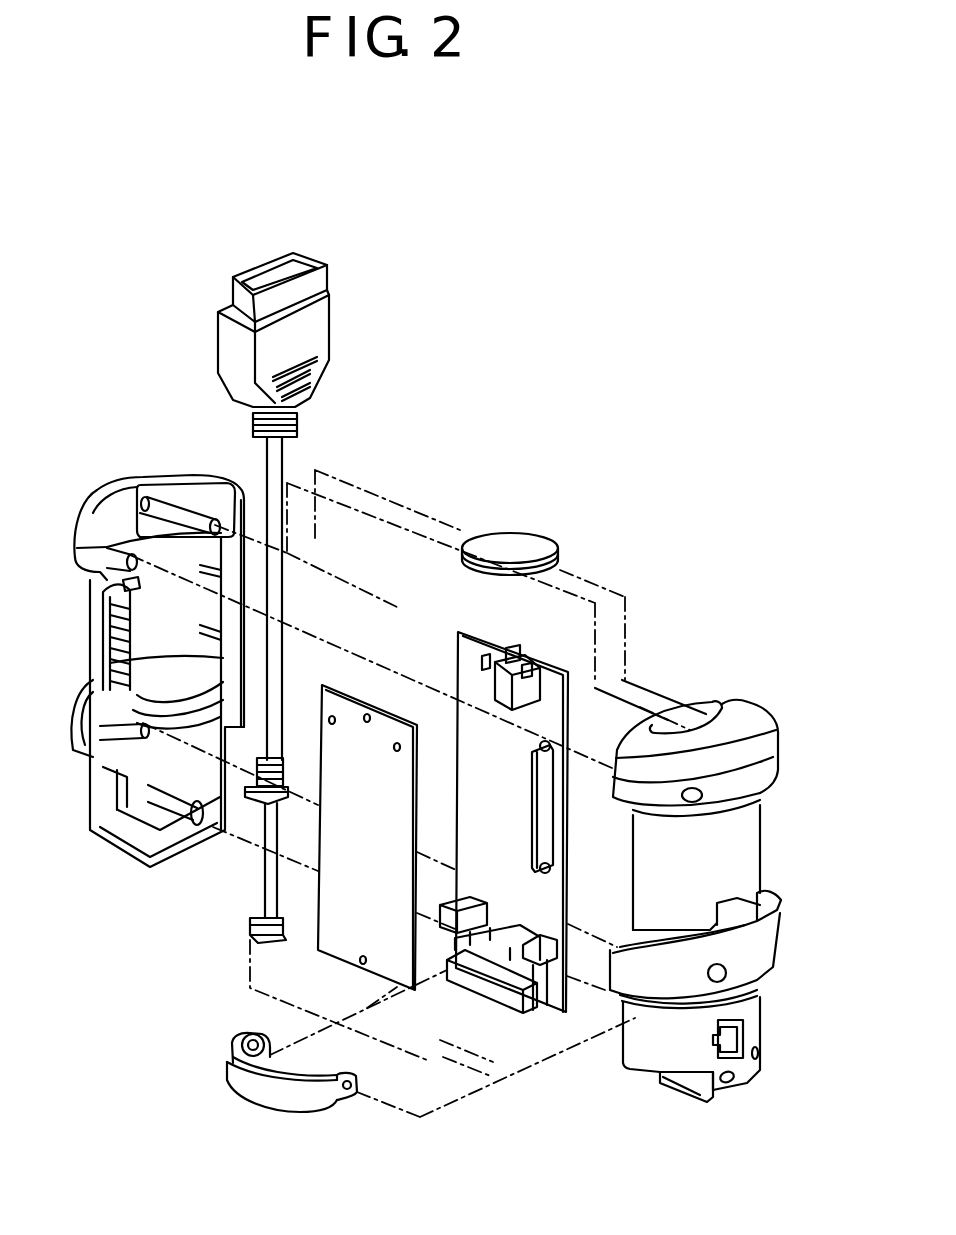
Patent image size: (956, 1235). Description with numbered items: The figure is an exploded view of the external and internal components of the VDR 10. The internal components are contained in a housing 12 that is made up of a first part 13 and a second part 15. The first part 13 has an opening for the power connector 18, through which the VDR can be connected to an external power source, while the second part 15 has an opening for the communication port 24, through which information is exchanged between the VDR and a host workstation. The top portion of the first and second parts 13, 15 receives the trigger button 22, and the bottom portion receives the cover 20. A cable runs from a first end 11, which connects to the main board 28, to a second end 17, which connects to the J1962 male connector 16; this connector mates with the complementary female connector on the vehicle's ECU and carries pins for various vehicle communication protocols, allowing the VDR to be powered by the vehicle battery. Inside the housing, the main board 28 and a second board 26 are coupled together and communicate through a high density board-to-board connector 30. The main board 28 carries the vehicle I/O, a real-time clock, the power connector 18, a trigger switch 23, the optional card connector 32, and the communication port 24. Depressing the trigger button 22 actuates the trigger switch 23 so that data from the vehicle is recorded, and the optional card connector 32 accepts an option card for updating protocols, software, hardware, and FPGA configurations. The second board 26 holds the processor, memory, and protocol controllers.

The VDR 10 is at (548, 372).
The first end 11 is at (245, 797).
The housing 12 is at (125, 487).
The first part 13 is at (82, 555).
The second part 15 is at (765, 840).
The J1962 male connector 16 is at (315, 285).
The second end 17 is at (285, 445).
The power connector 18 is at (448, 897).
The cover 20 is at (282, 1098).
The trigger button 22 is at (520, 540).
The trigger switch 23 is at (508, 645).
The communication port 24 is at (510, 1007).
The second board 26 is at (395, 987).
The main board 28 is at (573, 670).
The high density board-to-board connector 30 is at (555, 848).
The optional card connector 32 is at (532, 1010).